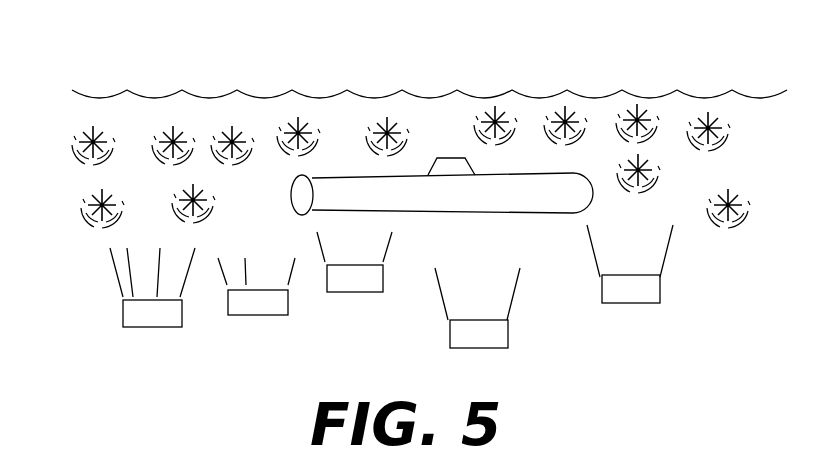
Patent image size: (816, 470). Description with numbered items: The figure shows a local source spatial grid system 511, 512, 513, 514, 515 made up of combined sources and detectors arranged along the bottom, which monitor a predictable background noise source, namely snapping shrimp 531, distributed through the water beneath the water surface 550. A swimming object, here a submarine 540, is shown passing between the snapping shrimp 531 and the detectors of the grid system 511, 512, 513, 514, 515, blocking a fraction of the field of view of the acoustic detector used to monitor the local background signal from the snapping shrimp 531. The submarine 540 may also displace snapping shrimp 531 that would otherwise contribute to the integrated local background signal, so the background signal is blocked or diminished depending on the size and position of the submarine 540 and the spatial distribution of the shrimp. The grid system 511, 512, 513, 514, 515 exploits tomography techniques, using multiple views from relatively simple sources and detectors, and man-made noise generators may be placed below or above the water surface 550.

The local source spatial grid system detector 511 is at (162, 322).
The local source spatial grid system detector 512 is at (258, 310).
The local source spatial grid system detector 513 is at (337, 283).
The local source spatial grid system detector 514 is at (499, 342).
The local source spatial grid system detector 515 is at (634, 300).
The snapping shrimp 531 is at (289, 120).
The submarine 540 is at (468, 205).
The water surface 550 is at (627, 98).